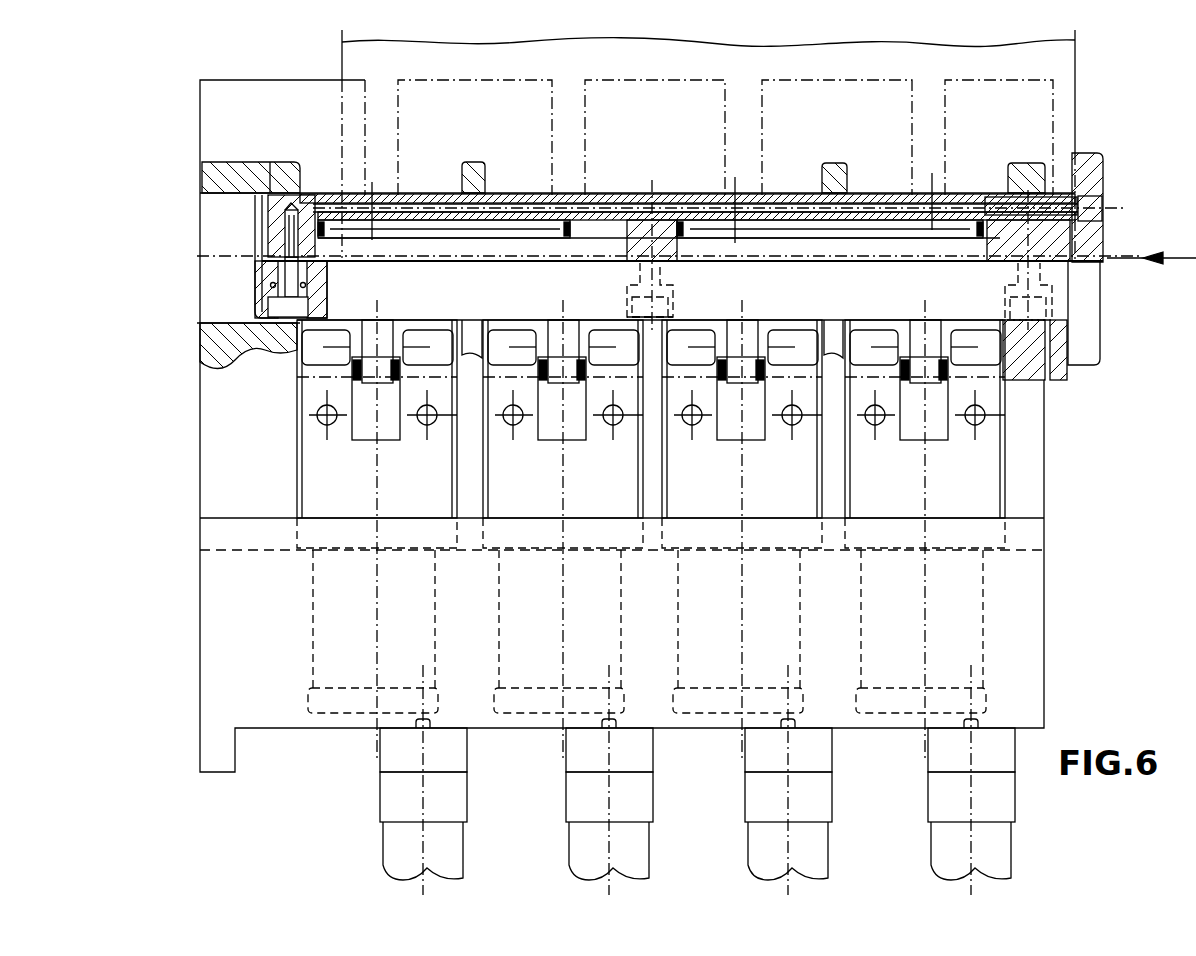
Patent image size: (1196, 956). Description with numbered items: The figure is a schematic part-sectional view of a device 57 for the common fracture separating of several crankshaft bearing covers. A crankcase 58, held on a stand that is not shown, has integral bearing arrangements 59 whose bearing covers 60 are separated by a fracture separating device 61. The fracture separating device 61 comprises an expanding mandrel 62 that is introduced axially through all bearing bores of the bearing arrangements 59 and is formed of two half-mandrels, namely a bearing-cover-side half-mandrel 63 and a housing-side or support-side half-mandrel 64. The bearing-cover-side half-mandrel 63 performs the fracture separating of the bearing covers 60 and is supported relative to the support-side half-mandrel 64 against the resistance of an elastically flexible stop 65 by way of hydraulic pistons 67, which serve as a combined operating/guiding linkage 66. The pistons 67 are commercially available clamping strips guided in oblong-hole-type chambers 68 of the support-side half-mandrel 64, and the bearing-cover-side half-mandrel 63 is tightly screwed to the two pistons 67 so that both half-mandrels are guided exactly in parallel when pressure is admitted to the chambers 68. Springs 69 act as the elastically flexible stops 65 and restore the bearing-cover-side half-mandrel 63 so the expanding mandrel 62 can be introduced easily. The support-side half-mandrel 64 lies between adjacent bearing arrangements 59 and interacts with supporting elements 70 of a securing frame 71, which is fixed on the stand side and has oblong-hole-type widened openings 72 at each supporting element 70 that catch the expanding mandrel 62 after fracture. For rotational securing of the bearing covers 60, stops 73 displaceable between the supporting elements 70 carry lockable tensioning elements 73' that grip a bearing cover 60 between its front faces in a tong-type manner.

The device 57 is at (1097, 538).
The crankcase 58 is at (1075, 56).
The bearing arrangements 59 is at (382, 131).
The bearing covers 60 is at (365, 380).
The fracture separating device 61 is at (320, 152).
The expanding mandrel 62 is at (1108, 238).
The bearing-cover-side half-mandrel 63 is at (890, 304).
The housing-side half-mandrel 64 is at (1090, 230).
The elastically flexible stop 65 is at (238, 280).
The operating/guiding linkage 66 is at (418, 224).
The hydraulic pistons 67 is at (473, 250).
The chambers 68 is at (607, 213).
The springs 69 is at (262, 288).
The supporting elements 70 is at (238, 162).
The securing frame 71 is at (1024, 648).
The openings 72 is at (472, 320).
The stops 73 is at (656, 597).
The lockable tensioning elements 73' is at (651, 317).